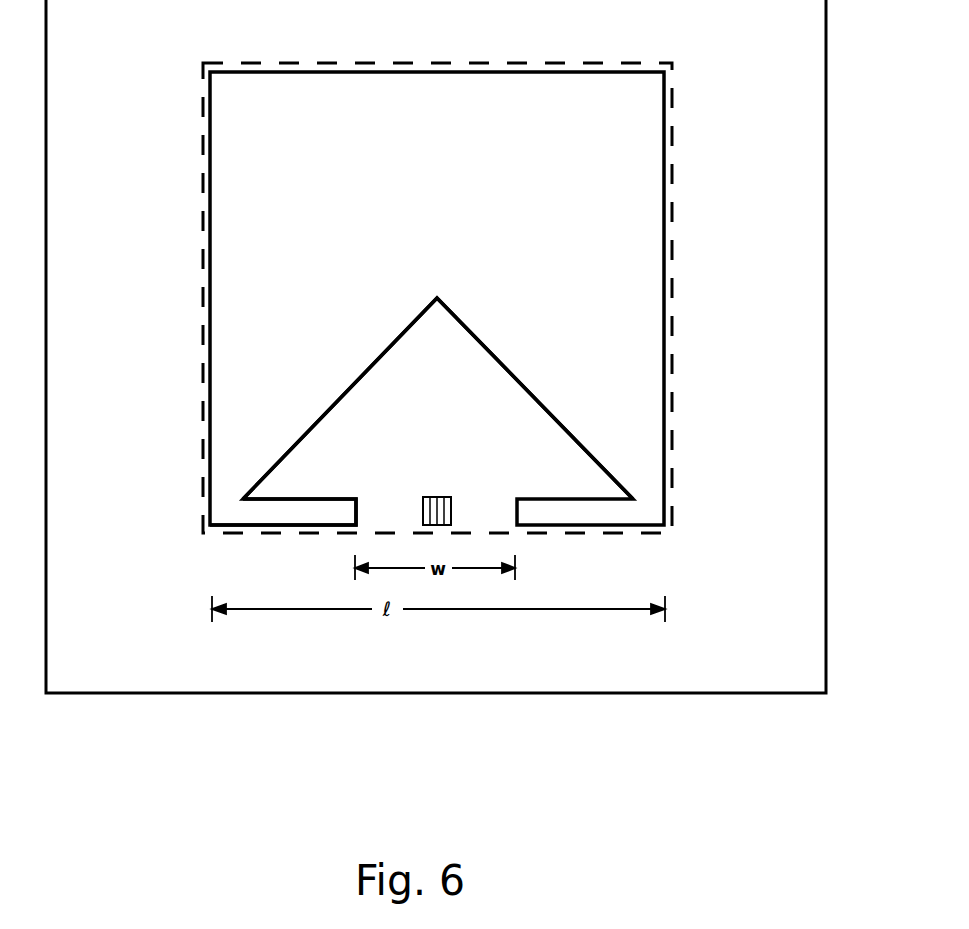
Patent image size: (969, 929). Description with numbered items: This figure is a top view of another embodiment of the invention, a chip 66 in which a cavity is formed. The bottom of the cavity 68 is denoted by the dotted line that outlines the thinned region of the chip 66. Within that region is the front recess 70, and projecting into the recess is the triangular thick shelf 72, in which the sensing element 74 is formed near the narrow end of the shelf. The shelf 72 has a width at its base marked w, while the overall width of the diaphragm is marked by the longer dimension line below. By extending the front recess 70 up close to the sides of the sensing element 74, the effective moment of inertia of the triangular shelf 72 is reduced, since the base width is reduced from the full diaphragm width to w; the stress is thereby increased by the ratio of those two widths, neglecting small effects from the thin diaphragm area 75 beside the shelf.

The chip 66 is at (826, 118).
The bottom of the cavity 68 is at (672, 259).
The front recess 70 is at (612, 375).
The triangular thick shelf 72 is at (583, 472).
The sensing element 74 is at (451, 510).
The thin diaphragm area 75 is at (309, 512).